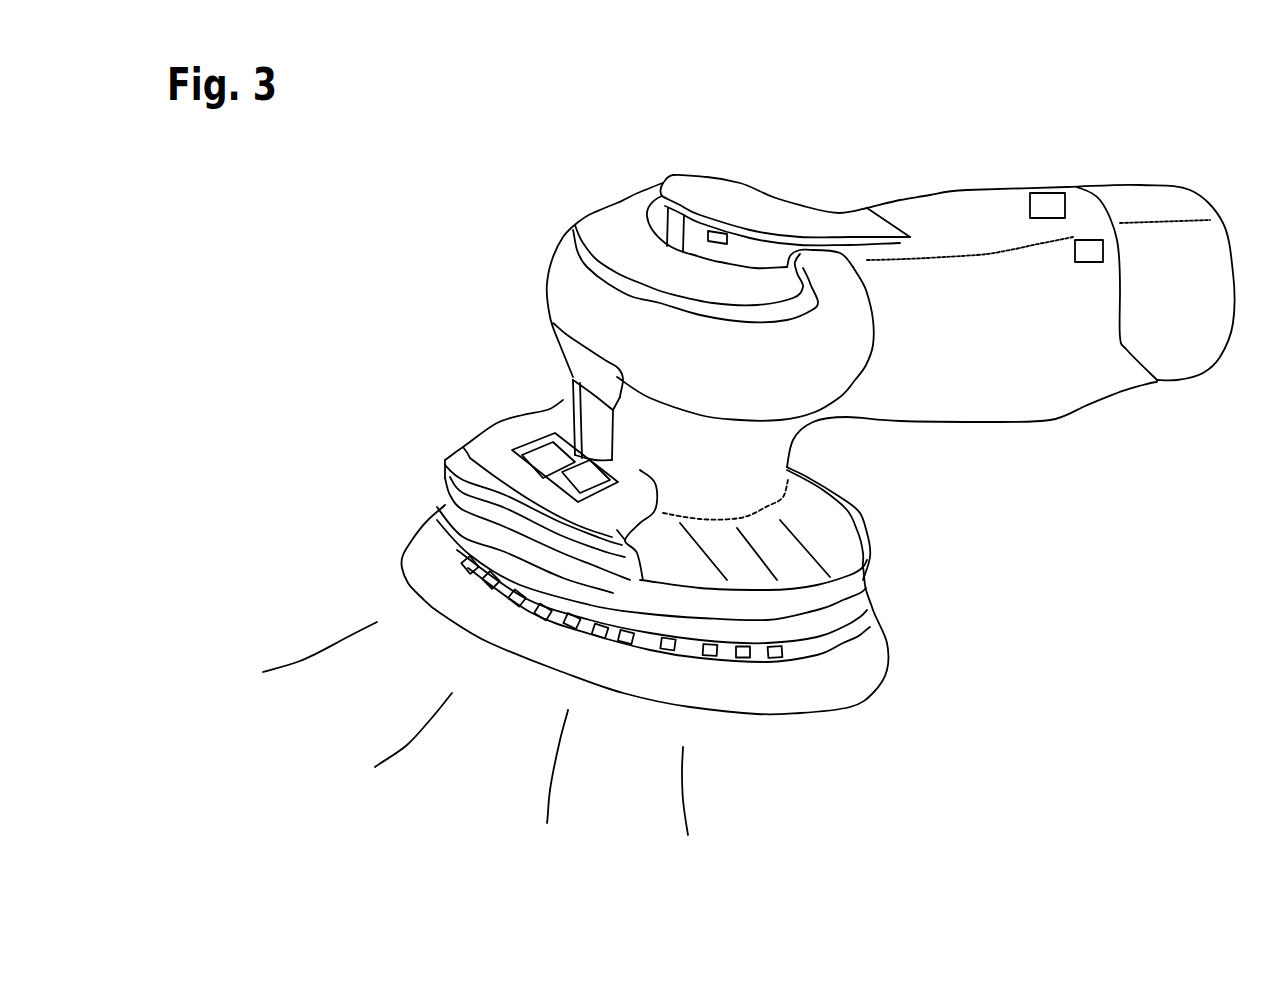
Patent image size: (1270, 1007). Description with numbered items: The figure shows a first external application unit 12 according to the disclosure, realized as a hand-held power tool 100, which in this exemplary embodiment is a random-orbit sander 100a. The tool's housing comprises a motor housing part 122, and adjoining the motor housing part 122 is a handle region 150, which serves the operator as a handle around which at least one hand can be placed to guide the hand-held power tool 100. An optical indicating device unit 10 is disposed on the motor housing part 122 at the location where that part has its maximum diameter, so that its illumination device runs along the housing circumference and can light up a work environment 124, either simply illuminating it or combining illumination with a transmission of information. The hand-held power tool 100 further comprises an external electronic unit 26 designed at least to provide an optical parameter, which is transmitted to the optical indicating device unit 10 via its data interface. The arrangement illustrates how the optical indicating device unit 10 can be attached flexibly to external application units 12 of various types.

The external application unit 12 is at (772, 405).
The hand-held power tool 100 is at (772, 405).
The random-orbit sander 100a is at (548, 218).
The handle region 150 is at (933, 217).
The external electronic unit 26 is at (1048, 207).
The motor housing part 122 is at (560, 410).
The optical indicating device unit 10 is at (475, 466).
The work environment 124 is at (398, 708).